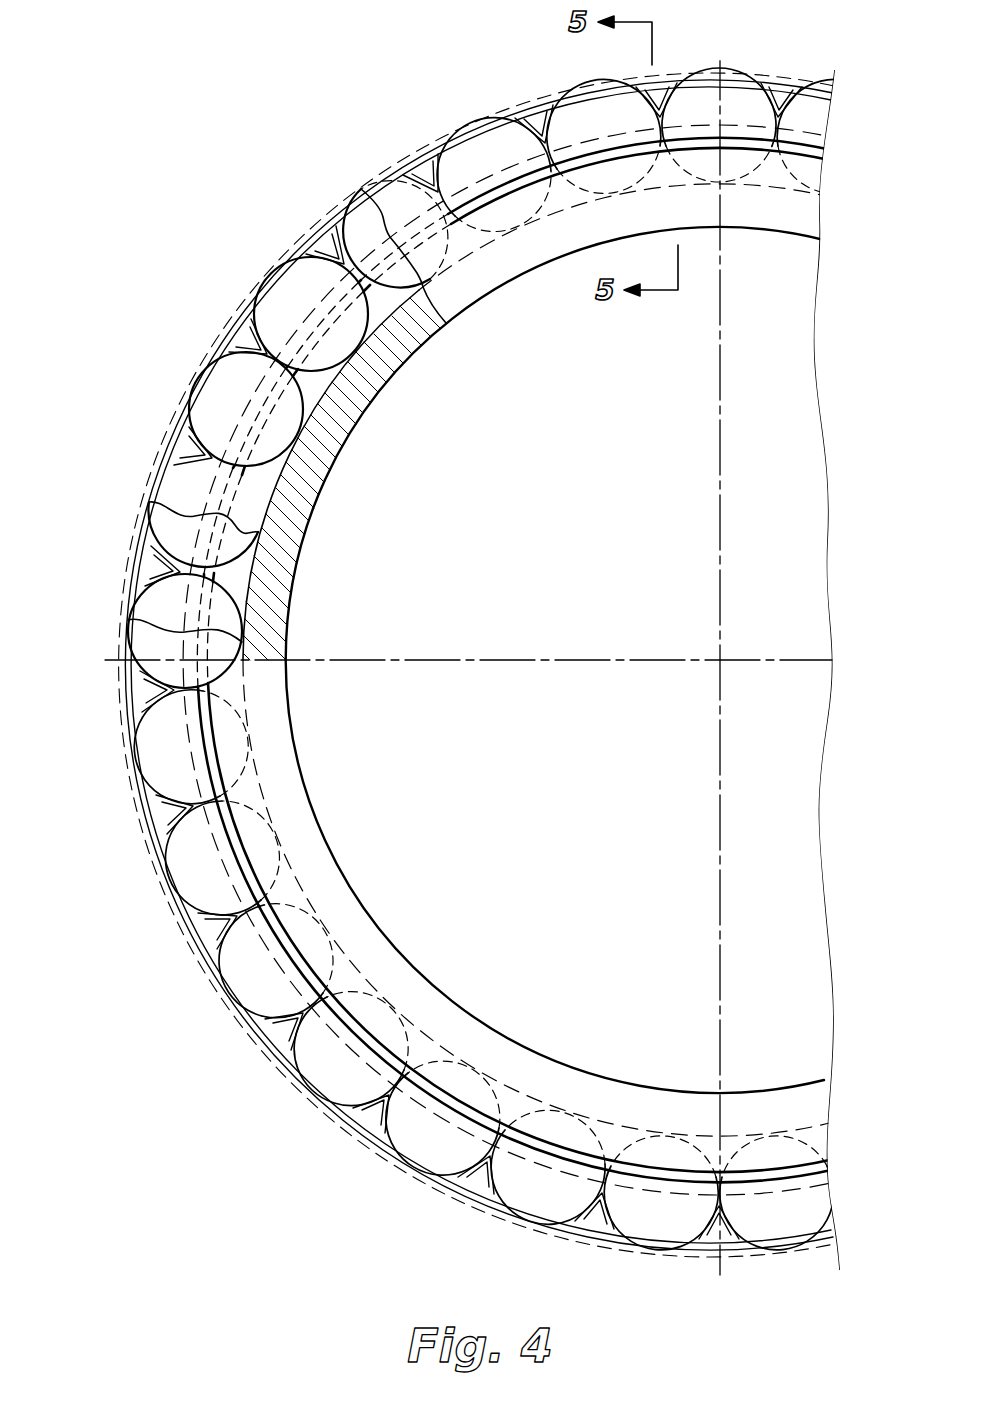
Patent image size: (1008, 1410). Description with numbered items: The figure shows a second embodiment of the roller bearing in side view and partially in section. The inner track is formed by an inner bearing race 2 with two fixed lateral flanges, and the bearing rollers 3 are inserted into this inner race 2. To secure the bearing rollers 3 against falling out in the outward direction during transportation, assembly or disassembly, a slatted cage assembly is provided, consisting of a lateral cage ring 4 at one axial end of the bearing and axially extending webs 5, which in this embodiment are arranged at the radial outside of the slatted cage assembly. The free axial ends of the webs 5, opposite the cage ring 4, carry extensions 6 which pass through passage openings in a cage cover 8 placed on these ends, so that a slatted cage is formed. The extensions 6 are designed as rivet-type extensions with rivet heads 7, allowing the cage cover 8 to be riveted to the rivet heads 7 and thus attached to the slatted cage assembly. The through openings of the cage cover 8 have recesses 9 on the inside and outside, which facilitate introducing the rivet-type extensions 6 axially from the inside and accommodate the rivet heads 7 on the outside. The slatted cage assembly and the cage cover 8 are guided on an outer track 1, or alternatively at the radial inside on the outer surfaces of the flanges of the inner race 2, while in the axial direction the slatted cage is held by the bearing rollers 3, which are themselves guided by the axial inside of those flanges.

The outer track 1 is at (312, 237).
The inner bearing race 2 is at (797, 213).
The bearing rollers 3 is at (288, 290).
The cage ring 4 is at (178, 483).
The webs 5 is at (138, 568).
The extensions 6 is at (130, 576).
The rivet heads 7 is at (148, 690).
The cage cover 8 is at (207, 858).
The recesses 9 is at (203, 927).